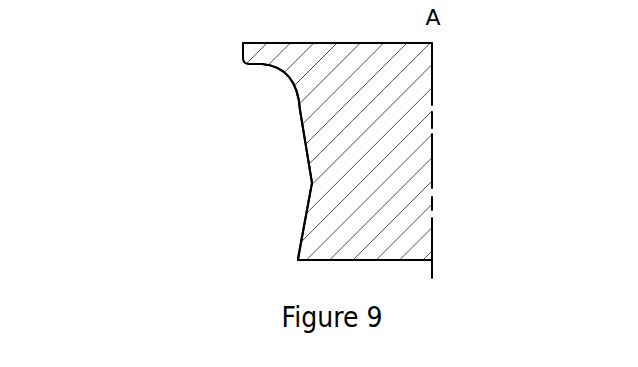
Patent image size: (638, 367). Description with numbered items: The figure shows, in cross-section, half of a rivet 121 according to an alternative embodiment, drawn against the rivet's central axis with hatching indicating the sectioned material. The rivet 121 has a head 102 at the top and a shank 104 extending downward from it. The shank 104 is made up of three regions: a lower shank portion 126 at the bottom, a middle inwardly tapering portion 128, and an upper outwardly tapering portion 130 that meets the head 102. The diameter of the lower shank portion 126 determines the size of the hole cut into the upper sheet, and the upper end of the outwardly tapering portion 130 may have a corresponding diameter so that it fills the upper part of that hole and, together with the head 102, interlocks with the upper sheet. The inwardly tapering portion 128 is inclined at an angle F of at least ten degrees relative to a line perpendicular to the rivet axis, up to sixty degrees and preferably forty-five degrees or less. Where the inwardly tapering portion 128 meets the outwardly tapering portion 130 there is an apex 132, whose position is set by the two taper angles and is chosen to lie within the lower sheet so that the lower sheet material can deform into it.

The rivet 121 is at (181, 80).
The head 102 is at (257, 49).
The shank 104 is at (415, 142).
The outwardly tapering portion 130 is at (298, 107).
The apex 132 is at (311, 183).
The inwardly tapering portion 128 is at (305, 207).
The angle F is at (298, 230).
The lower shank portion 126 is at (297, 257).